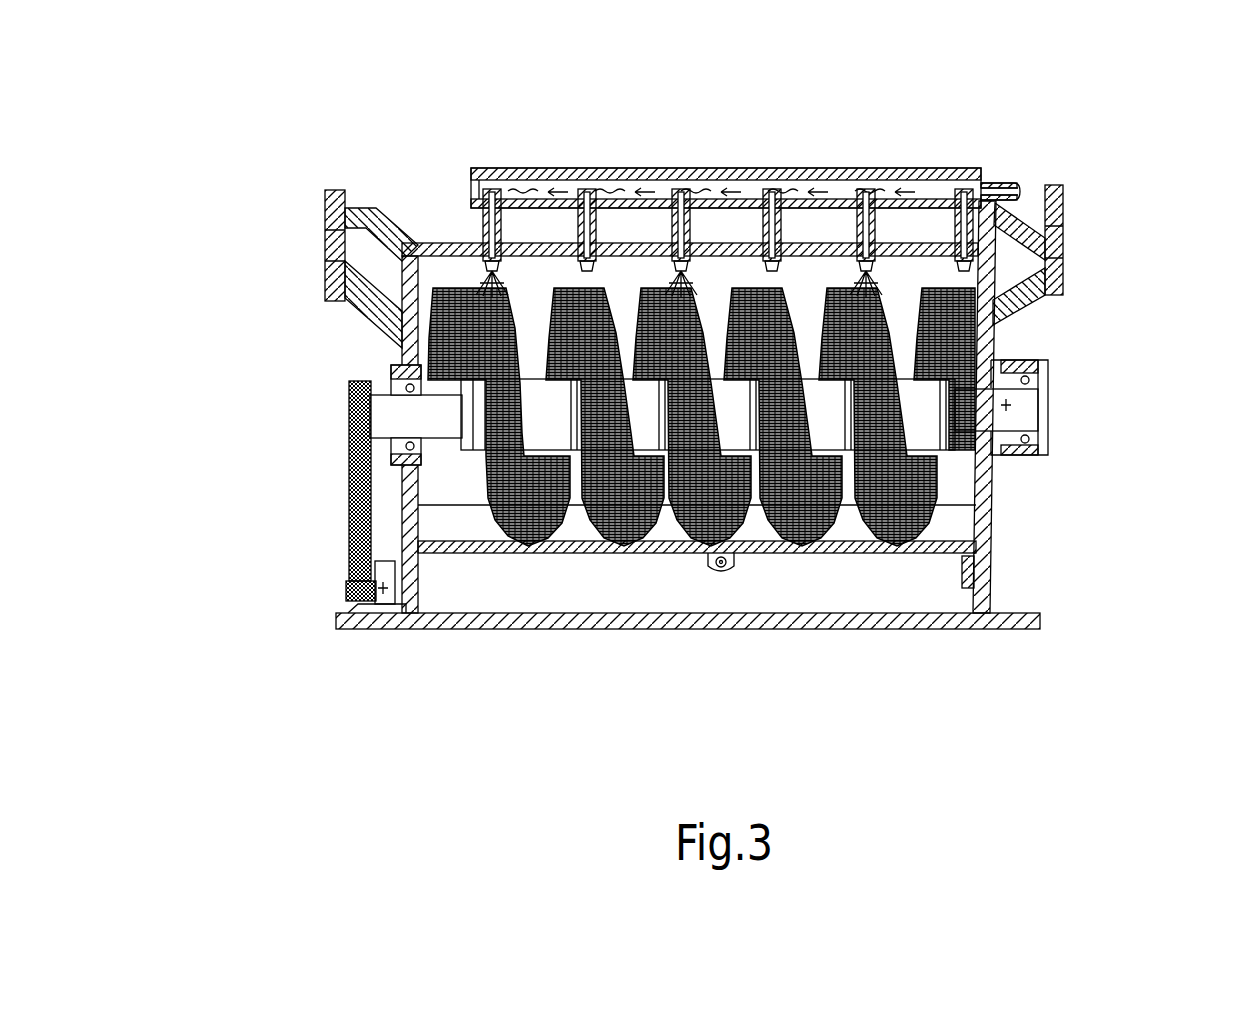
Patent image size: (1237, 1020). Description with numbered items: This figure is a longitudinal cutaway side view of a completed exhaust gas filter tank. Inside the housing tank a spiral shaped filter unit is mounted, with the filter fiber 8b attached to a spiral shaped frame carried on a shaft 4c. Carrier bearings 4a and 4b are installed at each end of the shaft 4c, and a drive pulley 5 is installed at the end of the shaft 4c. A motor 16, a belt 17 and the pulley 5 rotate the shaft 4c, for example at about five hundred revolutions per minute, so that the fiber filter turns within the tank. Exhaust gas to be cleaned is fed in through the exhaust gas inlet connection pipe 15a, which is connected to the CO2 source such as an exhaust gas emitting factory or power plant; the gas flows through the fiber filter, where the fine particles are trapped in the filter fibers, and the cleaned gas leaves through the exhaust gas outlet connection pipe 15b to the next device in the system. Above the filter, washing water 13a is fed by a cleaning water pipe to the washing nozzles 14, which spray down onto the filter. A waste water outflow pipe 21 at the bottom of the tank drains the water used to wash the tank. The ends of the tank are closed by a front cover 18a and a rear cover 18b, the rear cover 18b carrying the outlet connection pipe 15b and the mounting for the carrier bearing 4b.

The washing nozzles 14 is at (592, 222).
The washing water 13a is at (1012, 192).
The exhaust gas inlet connection pipe 15a is at (345, 200).
The exhaust gas outlet connection pipe 15b is at (1033, 242).
The carrier bearing 4a is at (383, 378).
The carrier bearing 4b is at (997, 447).
The shaft 4c is at (1002, 397).
The drive pulley 5 is at (343, 410).
The belt 17 is at (341, 505).
The front cover 18a is at (397, 473).
The rear cover 18b is at (982, 550).
The motor 16 is at (378, 583).
The filter fiber 8b is at (592, 540).
The waste water outflow pipe 21 is at (715, 560).